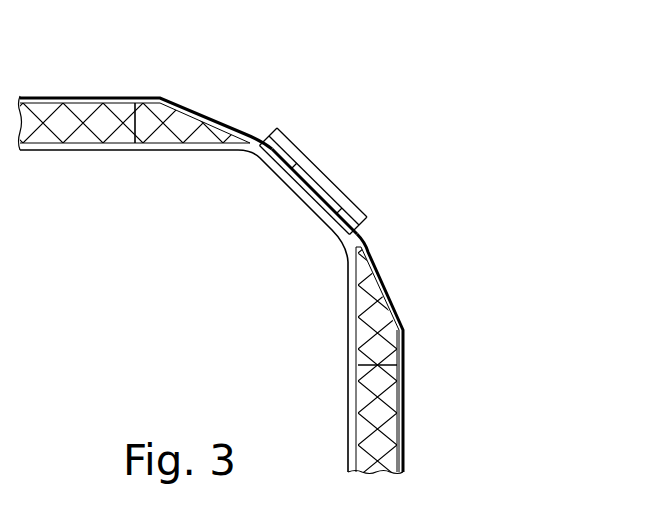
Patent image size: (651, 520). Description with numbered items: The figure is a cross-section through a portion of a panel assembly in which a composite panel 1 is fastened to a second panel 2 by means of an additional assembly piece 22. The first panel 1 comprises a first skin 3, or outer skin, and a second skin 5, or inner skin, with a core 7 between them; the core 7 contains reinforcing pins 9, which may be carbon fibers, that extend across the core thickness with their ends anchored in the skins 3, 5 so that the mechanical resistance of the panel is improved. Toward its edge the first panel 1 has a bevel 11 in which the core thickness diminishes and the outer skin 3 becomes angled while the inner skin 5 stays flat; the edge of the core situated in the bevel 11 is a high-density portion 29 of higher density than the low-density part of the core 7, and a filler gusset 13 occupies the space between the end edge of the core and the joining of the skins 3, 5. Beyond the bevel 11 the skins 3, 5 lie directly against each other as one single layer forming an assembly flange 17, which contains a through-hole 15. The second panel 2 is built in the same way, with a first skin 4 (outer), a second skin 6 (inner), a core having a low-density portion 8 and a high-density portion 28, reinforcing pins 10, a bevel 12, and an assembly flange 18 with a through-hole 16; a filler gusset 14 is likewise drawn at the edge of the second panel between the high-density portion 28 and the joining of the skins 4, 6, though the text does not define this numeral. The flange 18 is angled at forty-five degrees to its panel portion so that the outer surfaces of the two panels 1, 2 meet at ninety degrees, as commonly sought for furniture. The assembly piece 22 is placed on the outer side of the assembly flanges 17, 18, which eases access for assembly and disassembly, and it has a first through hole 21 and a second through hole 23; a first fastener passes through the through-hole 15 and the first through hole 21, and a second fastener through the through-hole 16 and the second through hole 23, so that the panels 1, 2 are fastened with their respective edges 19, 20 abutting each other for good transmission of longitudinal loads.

The composite panel 1 is at (243, 241).
The second panel 2 is at (409, 345).
The first skin 3 is at (176, 103).
The first skin 4 is at (402, 400).
The second skin 5 is at (200, 151).
The second skin 6 is at (358, 370).
The core 7 is at (44, 143).
The low-density portion 8 is at (363, 415).
The reinforcing pins 9 is at (90, 143).
The reinforcing pins 10 is at (392, 428).
The bevel 11 is at (174, 251).
The bevel 12 is at (378, 345).
The filler gusset 13 is at (244, 134).
The edge region of second panel 14 is at (360, 258).
The through-hole 15 is at (275, 168).
The through-hole 16 is at (332, 218).
The assembly flange 17 is at (230, 190).
The assembly flange 18 is at (347, 179).
The edge 19 is at (297, 192).
The edge 20 is at (309, 196).
The first through hole 21 is at (300, 150).
The assembly piece 22 is at (318, 182).
The second through hole 23 is at (342, 196).
The high-density portion 28 is at (350, 322).
The high-density portion 29 is at (148, 143).